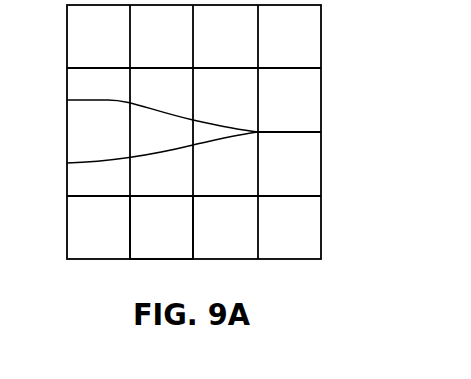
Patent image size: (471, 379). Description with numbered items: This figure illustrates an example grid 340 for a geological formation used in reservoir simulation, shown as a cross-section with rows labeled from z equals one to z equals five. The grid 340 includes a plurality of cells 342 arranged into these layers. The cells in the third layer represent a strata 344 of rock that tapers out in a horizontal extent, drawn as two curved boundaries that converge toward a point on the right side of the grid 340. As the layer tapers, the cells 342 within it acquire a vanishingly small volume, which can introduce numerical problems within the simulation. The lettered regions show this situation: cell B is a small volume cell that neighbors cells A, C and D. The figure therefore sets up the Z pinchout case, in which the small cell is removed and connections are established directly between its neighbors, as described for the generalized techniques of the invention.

The grid 340 is at (114, 265).
The cells 342 is at (161, 227).
The strata 344 is at (145, 157).